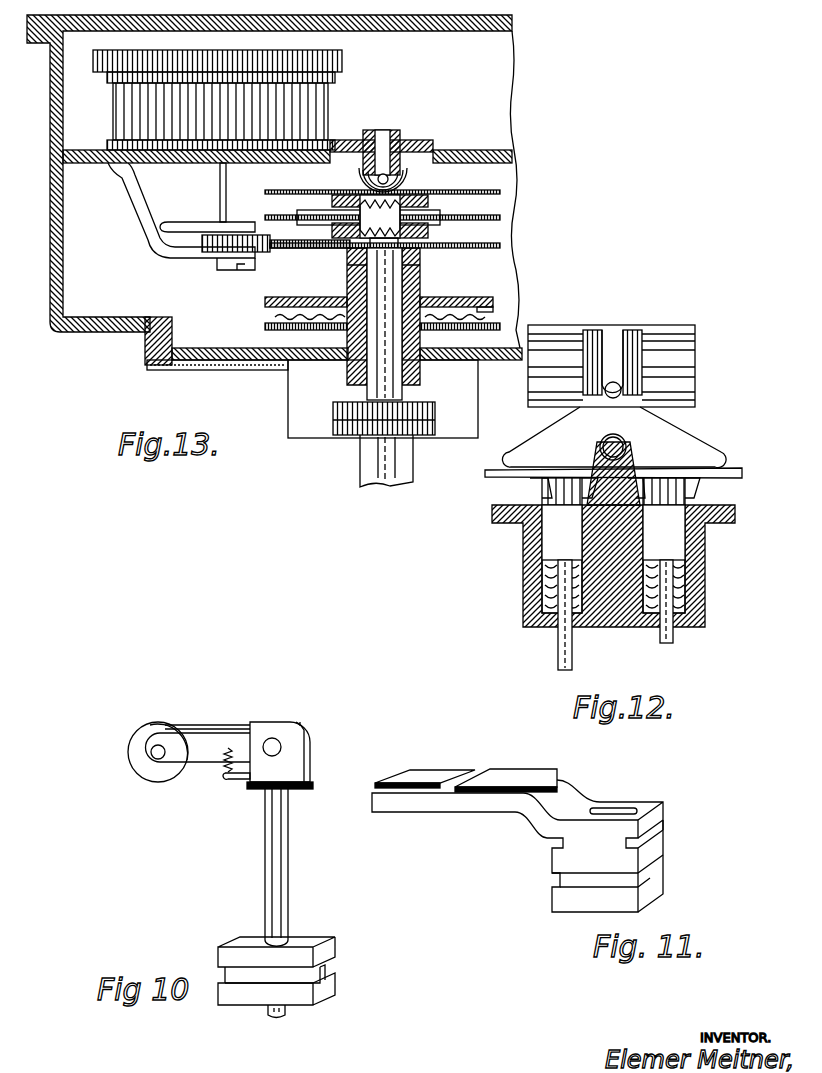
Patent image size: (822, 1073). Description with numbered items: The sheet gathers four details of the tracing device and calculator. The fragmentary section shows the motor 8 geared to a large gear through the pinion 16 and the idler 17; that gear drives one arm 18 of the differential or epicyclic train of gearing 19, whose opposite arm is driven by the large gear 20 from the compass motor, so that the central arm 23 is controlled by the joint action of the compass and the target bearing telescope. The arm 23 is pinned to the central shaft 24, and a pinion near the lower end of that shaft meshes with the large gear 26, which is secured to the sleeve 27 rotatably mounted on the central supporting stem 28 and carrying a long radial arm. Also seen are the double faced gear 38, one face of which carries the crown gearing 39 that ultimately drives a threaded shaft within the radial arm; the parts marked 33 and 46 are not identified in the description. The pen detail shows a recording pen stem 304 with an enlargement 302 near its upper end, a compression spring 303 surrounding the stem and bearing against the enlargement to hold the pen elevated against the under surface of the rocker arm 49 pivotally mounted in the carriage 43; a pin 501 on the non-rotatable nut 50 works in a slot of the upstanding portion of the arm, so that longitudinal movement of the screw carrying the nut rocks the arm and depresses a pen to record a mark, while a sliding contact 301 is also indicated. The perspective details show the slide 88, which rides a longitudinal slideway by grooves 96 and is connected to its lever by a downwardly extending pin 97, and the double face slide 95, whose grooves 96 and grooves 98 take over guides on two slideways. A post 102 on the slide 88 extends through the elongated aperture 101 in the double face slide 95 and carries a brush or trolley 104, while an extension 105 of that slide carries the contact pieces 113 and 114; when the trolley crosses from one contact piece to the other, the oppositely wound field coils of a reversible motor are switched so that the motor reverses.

In FIG. 13, the motor 8 is at (303, 118).
In FIG. 13, the pinion 16 is at (210, 260).
In FIG. 13, the idler 17 is at (262, 250).
In FIG. 13, the arm of differential train 18 is at (357, 265).
In FIG. 13, the differential or epicyclic train of gearing 19 is at (382, 212).
In FIG. 13, the large gear 20 is at (291, 188).
In FIG. 13, the central arm 23 is at (336, 250).
In FIG. 13, the central shaft 24 is at (362, 182).
In FIG. 13, the large gear 26 is at (268, 328).
In FIG. 13, the sleeve 27 is at (360, 355).
In FIG. 13, the central supporting stem 28 is at (368, 455).
In FIG. 13, the rod 33 is at (272, 219).
In FIG. 13, the double faced gear 38 is at (462, 291).
In FIG. 13, the crown gearing 39 is at (492, 310).
In FIG. 13, the bearing block 46 is at (405, 172).
In FIG. 12, the carriage 43 is at (624, 627).
In FIG. 12, the rocker arm 49 is at (613, 440).
In FIG. 12, the non-rotatable nut 50 is at (535, 367).
In FIG. 12, the sliding contact or trolley 301 is at (558, 645).
In FIG. 12, the enlargement 302 is at (541, 494).
In FIG. 12, the compression spring 303 is at (687, 588).
In FIG. 12, the stem 304 is at (645, 385).
In FIG. 12, the pin 501 is at (604, 389).
In FIG. 10, the slide 88 is at (276, 952).
In FIG. 10, the grooves 96 is at (310, 978).
In FIG. 11, the grooves 96 is at (664, 828).
In FIG. 10, the downwardly extending pin 97 is at (283, 1018).
In FIG. 10, the post 102 is at (289, 869).
In FIG. 10, the brush or trolley 104 is at (173, 724).
In FIG. 11, the double face slide 95 is at (594, 857).
In FIG. 11, the grooves 98 is at (556, 880).
In FIG. 11, the elongated aperture 101 is at (617, 808).
In FIG. 11, the extension 105 is at (490, 812).
In FIG. 11, the contact piece 113 is at (521, 769).
In FIG. 11, the contact piece 114 is at (410, 779).